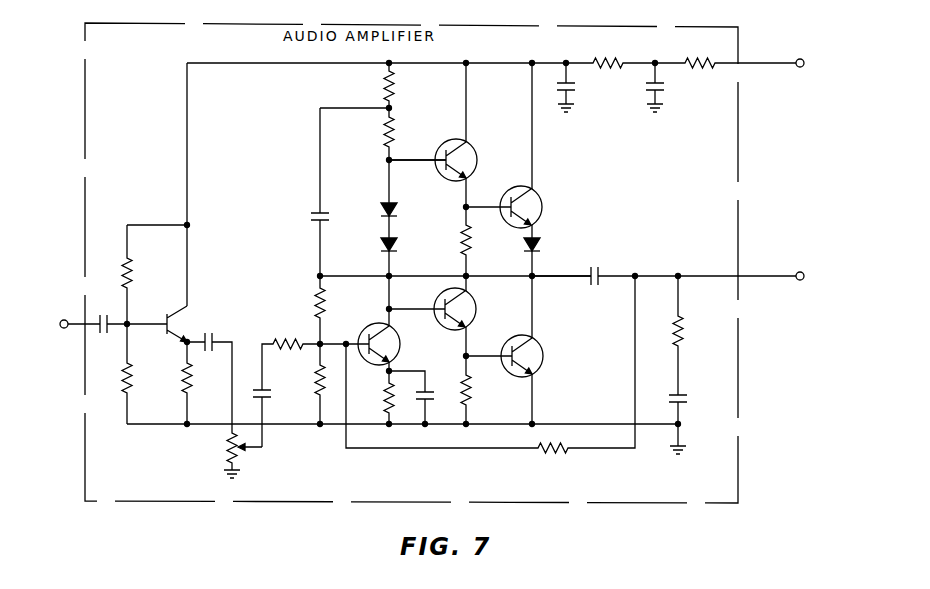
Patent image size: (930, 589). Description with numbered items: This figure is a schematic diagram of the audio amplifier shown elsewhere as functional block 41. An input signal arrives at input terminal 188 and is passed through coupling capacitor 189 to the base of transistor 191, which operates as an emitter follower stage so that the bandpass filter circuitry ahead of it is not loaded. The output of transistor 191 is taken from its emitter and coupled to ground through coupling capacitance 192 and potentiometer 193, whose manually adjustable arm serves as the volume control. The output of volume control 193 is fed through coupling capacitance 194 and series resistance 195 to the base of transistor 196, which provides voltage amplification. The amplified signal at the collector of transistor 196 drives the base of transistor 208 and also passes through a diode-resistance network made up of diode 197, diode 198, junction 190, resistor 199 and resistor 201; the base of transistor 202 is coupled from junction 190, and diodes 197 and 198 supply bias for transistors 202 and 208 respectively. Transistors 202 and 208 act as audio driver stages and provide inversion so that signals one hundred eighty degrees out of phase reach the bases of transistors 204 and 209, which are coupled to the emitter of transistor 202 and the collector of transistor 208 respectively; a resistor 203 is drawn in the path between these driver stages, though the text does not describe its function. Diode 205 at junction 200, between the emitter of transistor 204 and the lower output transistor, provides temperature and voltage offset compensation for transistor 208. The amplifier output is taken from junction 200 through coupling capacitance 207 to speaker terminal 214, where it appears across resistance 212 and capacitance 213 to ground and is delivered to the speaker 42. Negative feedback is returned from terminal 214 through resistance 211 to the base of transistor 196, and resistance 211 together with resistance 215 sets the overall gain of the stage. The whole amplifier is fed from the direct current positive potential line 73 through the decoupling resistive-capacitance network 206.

The audio amplifier functional block 41 is at (565, 26).
The speaker 42 is at (820, 294).
The direct current positive potential line 73 is at (800, 59).
The input terminal 188 is at (62, 320).
The coupling capacitor 189 is at (98, 332).
The junction 190 is at (392, 158).
The transistor 191 is at (161, 314).
The coupling capacitance 192 is at (215, 333).
The potentiometer 193 is at (228, 455).
The coupling capacitance 194 is at (271, 399).
The series resistance 195 is at (292, 339).
The transistor 196 is at (368, 326).
The diode 197 is at (380, 247).
The diode 198 is at (385, 207).
The resistor 199 is at (384, 132).
The junction 200 is at (537, 271).
The resistor 201 is at (396, 92).
The transistor 202 is at (470, 138).
The resistor 203 is at (462, 236).
The transistor 204 is at (545, 197).
The diode 205 is at (536, 232).
The decoupling resistive-capacitance network 206 is at (640, 63).
The coupling capacitance 207 is at (600, 265).
The transistor 208 is at (478, 318).
The transistor 209 is at (540, 348).
The resistance 211 is at (548, 456).
The resistance 212 is at (690, 333).
The capacitance 213 is at (683, 398).
The speaker terminal 214 is at (797, 271).
The resistance 215 is at (318, 293).